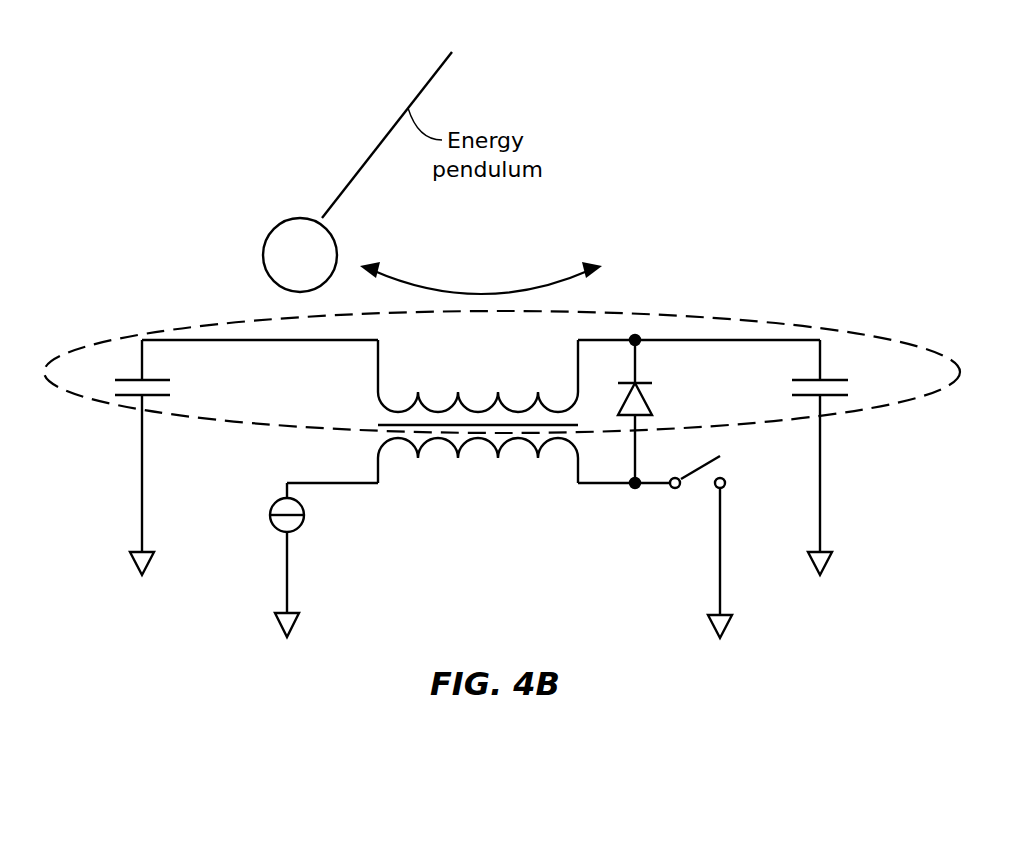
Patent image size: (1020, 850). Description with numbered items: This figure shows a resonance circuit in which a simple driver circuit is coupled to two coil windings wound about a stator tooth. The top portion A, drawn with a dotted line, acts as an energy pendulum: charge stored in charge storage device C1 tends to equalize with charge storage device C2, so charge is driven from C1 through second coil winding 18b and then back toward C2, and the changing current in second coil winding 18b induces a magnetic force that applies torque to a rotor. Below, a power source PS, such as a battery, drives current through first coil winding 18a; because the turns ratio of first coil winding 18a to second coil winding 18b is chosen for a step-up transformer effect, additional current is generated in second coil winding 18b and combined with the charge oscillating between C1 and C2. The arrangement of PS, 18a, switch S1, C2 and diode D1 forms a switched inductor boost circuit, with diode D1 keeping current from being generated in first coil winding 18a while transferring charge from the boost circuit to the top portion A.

The top portion A is at (211, 325).
The charge storage device C1 is at (163, 457).
The charge storage device C2 is at (800, 457).
The diode D1 is at (653, 411).
The switch S1 is at (701, 547).
The power source PS is at (269, 560).
The first coil winding 18a is at (498, 458).
The second coil winding 18b is at (498, 393).